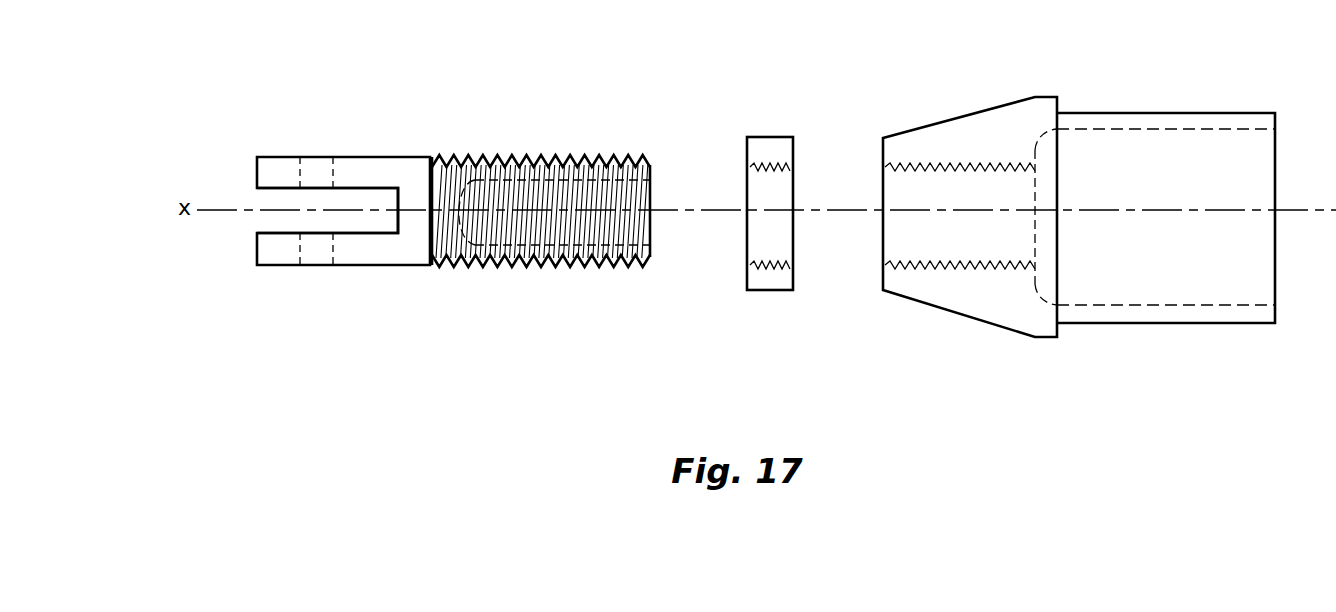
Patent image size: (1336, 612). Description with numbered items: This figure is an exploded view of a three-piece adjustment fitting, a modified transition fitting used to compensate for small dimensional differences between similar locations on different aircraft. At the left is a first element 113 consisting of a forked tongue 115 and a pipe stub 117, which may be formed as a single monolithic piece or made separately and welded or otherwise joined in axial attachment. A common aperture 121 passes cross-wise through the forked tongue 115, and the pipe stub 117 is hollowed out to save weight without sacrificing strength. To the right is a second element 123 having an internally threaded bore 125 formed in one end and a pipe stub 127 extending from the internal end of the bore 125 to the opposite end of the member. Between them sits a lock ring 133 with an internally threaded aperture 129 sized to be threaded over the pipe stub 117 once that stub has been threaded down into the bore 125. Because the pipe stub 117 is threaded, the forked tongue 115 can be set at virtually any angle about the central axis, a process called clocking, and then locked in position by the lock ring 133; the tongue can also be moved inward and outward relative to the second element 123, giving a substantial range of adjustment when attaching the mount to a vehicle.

The first element 113 is at (398, 165).
The forked tongue 115 is at (372, 259).
The pipe stub 117 is at (565, 256).
The common aperture 121 is at (320, 156).
The second element 123 is at (1000, 309).
The internally threaded bore 125 is at (897, 183).
The pipe stub 127 is at (1182, 120).
The internally threaded aperture 129 is at (765, 287).
The lock ring 133 is at (755, 190).